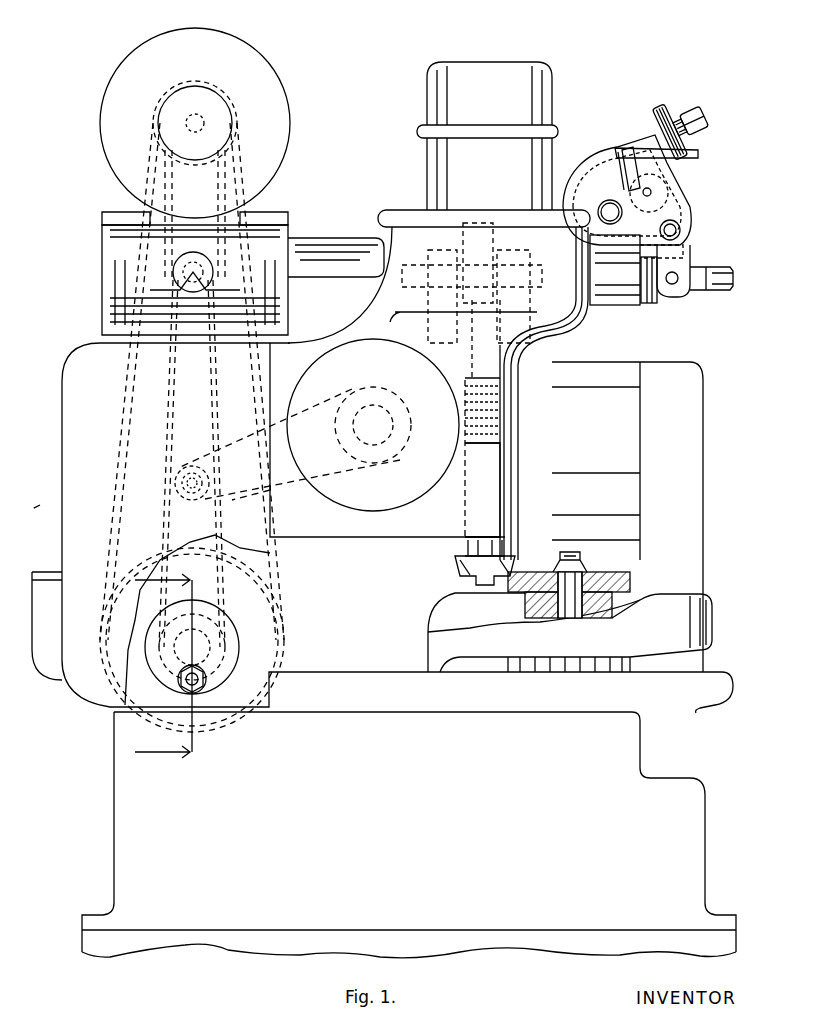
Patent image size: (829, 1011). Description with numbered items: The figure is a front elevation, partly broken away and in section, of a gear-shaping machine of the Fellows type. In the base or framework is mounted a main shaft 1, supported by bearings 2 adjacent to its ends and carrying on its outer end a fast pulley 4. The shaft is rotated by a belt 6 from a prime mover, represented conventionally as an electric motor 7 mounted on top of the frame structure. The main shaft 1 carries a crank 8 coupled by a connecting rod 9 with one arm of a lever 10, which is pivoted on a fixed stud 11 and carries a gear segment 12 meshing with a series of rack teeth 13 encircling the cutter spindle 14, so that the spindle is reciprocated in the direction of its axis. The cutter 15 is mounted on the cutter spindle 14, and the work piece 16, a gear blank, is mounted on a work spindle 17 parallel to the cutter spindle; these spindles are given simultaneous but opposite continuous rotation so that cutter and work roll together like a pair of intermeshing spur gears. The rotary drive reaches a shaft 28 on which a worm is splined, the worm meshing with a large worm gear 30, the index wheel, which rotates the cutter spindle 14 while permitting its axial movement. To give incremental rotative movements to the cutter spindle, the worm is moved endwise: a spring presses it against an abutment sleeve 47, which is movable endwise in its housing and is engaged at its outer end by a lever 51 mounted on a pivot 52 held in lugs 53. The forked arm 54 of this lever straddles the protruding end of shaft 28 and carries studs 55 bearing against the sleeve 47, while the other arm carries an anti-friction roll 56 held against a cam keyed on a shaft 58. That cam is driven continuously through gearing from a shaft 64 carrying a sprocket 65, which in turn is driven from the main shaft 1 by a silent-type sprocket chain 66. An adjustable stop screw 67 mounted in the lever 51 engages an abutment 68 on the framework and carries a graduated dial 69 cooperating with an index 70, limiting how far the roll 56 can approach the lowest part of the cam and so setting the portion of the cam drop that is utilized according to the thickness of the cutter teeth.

The main shaft 1 is at (225, 650).
The bearing 2 is at (155, 667).
The fast pulley 4 is at (104, 645).
The belt 6 is at (112, 448).
The electric motor 7 is at (243, 62).
The crank 8 is at (206, 678).
The connecting rod 9 is at (205, 587).
The lever 10 is at (283, 493).
The fixed stud 11 is at (380, 445).
The gear segment 12 is at (470, 452).
The rack teeth 13 is at (518, 421).
The cutter spindle 14 is at (518, 490).
The cutter 15 is at (510, 557).
The work piece 16 is at (604, 580).
The work spindle 17 is at (582, 555).
The shaft 28 is at (718, 270).
The worm gear 30 is at (575, 305).
The sleeve 47 is at (650, 303).
The lever 51 is at (700, 205).
The pivot 52 is at (681, 232).
The lugs 53 is at (683, 223).
The arm 54 is at (684, 268).
The studs 55 is at (676, 287).
The anti-friction roll 56 is at (662, 190).
The shaft 58 is at (607, 207).
The shaft 64 is at (215, 245).
The sprocket 65 is at (196, 240).
The sprocket chain 66 is at (168, 396).
The adjustable stop screw 67 is at (632, 152).
The abutment 68 is at (624, 172).
The graduated dial 69 is at (703, 138).
The index 70 is at (698, 153).